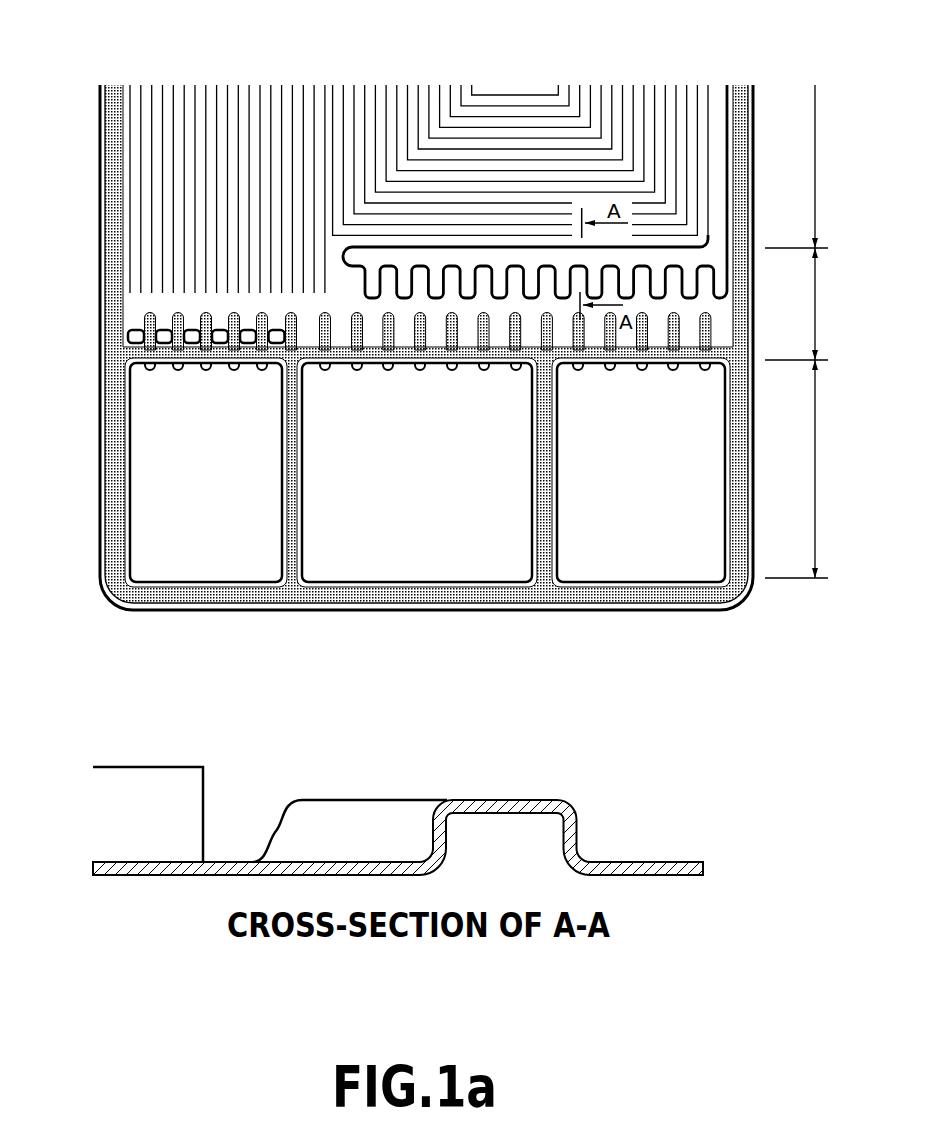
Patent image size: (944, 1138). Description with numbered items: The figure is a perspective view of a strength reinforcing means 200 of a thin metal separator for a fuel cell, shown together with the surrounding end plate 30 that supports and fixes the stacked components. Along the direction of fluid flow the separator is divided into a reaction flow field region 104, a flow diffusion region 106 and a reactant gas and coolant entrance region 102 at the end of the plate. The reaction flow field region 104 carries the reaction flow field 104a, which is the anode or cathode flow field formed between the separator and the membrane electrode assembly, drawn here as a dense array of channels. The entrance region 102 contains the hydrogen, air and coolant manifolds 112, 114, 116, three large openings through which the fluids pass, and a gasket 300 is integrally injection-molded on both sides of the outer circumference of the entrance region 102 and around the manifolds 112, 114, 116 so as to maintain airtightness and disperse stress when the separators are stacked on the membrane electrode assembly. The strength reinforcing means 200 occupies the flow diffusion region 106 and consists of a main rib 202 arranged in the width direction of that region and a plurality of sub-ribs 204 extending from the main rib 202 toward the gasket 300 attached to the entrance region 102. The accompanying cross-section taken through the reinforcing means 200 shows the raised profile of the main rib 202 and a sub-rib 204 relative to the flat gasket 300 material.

The end plate 30 is at (686, 350).
The reactant gas and coolant entrance region 102 is at (818, 469).
The reaction flow field region 104 is at (818, 166).
The reaction flow field 104a is at (173, 194).
The flow diffusion region 106 is at (818, 304).
The hydrogen manifold 112 is at (215, 528).
The air manifold 114 is at (617, 528).
The coolant manifold 116 is at (365, 535).
The strength reinforcing means 200 is at (502, 306).
The main rib 202 is at (487, 258).
The sub-ribs 204 is at (530, 293).
The gasket 300 is at (155, 766).